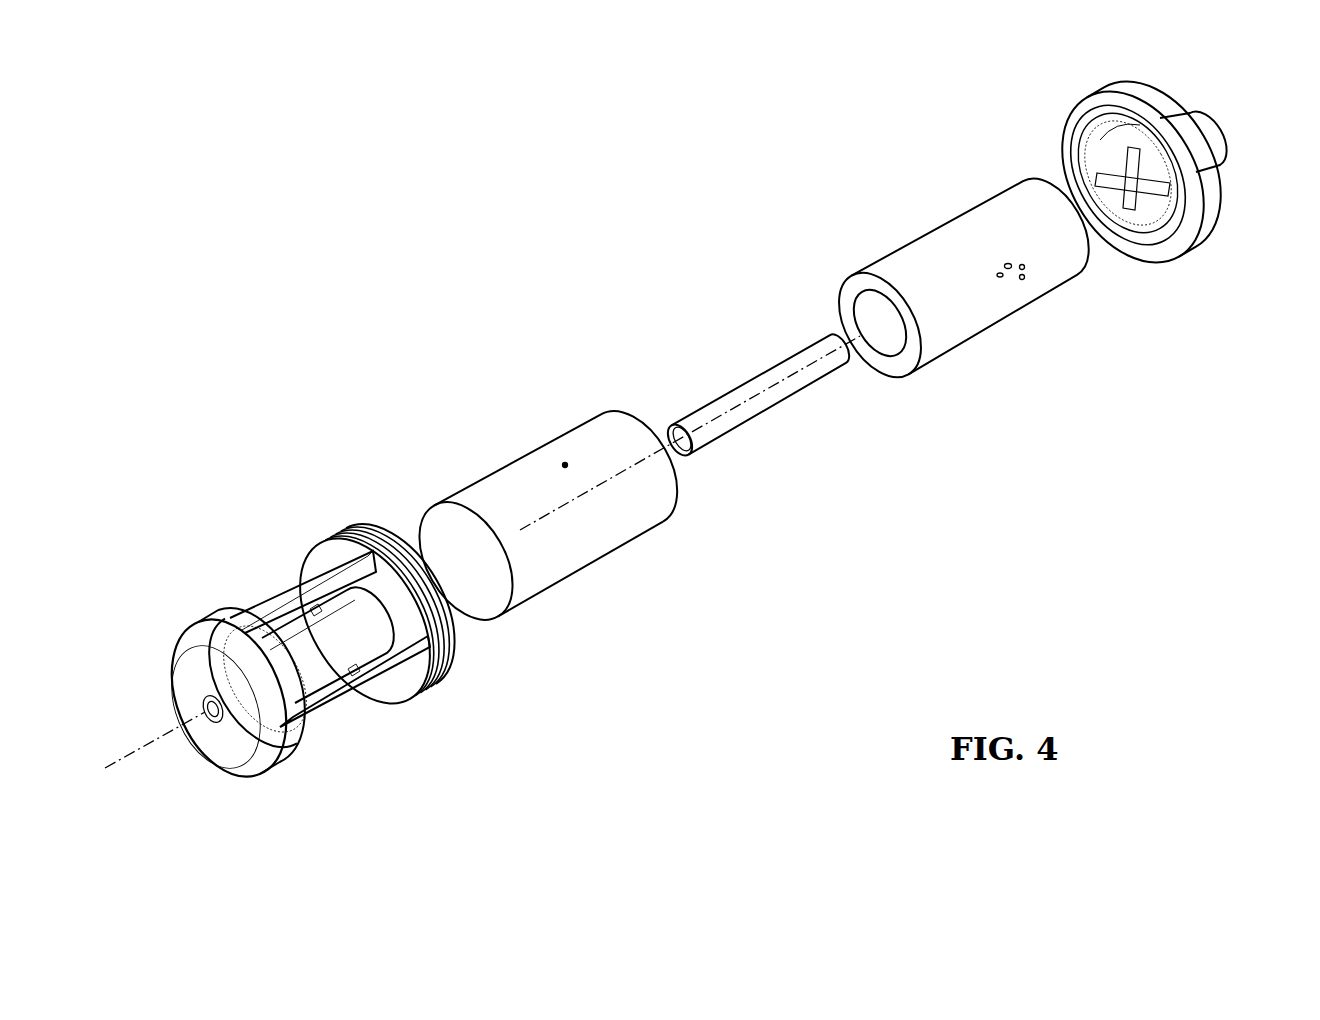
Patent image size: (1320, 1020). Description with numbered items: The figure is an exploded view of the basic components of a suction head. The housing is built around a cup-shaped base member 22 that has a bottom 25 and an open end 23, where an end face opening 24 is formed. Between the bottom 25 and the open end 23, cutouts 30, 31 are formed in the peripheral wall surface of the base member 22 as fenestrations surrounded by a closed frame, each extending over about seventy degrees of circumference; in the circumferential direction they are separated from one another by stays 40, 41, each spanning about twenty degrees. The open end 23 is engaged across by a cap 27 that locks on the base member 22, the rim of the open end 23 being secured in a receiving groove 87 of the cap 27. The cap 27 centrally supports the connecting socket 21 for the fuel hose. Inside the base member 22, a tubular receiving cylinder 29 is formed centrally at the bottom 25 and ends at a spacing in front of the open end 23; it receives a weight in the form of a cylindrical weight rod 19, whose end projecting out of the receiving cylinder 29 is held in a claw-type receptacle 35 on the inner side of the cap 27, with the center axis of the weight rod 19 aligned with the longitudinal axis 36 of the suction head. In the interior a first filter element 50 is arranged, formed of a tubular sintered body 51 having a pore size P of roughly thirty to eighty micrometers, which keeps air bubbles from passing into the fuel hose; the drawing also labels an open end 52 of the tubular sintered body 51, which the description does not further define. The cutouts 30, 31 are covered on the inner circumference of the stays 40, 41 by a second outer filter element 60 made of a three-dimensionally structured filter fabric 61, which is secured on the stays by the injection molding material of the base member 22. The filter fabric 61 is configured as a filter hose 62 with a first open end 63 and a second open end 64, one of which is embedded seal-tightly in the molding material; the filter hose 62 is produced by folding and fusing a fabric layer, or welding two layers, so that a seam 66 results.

The weight rod 19 is at (770, 400).
The connecting socket 21 is at (1213, 127).
The base member 22 is at (220, 723).
The open end 23 is at (380, 537).
The end face opening 24 is at (437, 641).
The bottom 25 is at (233, 750).
The cap 27 is at (1150, 196).
The receiving cylinder 29 is at (333, 633).
The cutout 30 is at (321, 636).
The cutout 31 is at (360, 667).
The claw-type receptacle 35 is at (1080, 168).
The longitudinal axis 36 is at (205, 712).
The stay 40 is at (297, 593).
The stay 41 is at (350, 710).
The first filter element 50 is at (906, 282).
The sintered body 51 is at (972, 288).
The sleeve bore 52 is at (852, 290).
The second outer filter element 60 is at (552, 503).
The filter fabric 61 is at (565, 465).
The filter hose 62 is at (528, 487).
The first open end 63 is at (453, 553).
The second open end 64 is at (677, 487).
The seam 66 is at (550, 547).
The receiving groove 87 is at (1103, 240).
The pore size P is at (1013, 282).